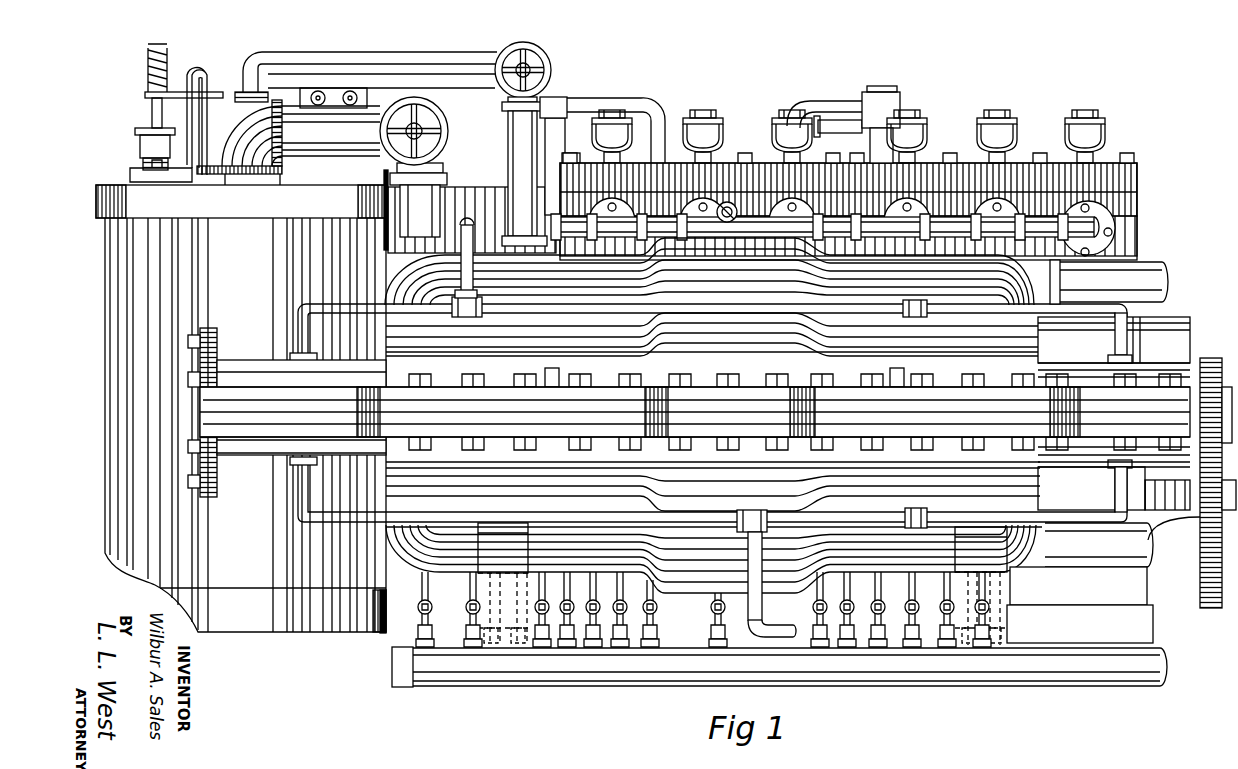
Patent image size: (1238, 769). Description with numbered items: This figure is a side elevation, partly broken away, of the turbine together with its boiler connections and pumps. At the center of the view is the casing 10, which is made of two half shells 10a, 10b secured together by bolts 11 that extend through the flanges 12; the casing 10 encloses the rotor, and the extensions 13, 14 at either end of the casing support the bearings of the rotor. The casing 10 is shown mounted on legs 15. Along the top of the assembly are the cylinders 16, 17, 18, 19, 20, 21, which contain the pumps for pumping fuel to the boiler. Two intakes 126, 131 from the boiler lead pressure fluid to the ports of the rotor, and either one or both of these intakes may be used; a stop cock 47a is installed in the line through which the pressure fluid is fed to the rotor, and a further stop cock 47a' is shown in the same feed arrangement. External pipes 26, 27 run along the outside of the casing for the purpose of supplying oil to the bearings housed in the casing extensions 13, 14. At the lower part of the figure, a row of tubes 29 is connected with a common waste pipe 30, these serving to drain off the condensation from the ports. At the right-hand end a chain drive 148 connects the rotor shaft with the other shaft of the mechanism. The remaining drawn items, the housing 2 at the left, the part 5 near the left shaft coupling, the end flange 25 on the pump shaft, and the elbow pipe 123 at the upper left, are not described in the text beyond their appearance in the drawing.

The housing 2 is at (110, 366).
The shaft housing 5 is at (200, 412).
The casing 10 is at (695, 394).
The half shell 10a is at (695, 398).
The half shell 10b is at (695, 427).
The bolts 11 is at (632, 378).
The flanges 12 is at (752, 380).
The casing extension 13 is at (232, 470).
The casing extension 14 is at (1063, 462).
The legs 15 is at (490, 584).
The cylinder 16 is at (1140, 172).
The cylinder 17 is at (1015, 163).
The cylinder 18 is at (924, 163).
The cylinder 19 is at (806, 163).
The cylinder 20 is at (719, 160).
The cylinder 21 is at (592, 158).
The cam shaft end flange 25 is at (1106, 228).
The external pipe 26 is at (705, 313).
The external pipe 27 is at (700, 512).
The tubes 29 is at (625, 578).
The waste pipe 30 is at (940, 674).
The stop cock 47a is at (709, 271).
The casing line 47a' is at (711, 277).
The elbow pipe 123 is at (258, 177).
The intake 126 is at (456, 217).
The intake 131 is at (518, 143).
The chain drive 148 is at (1205, 578).